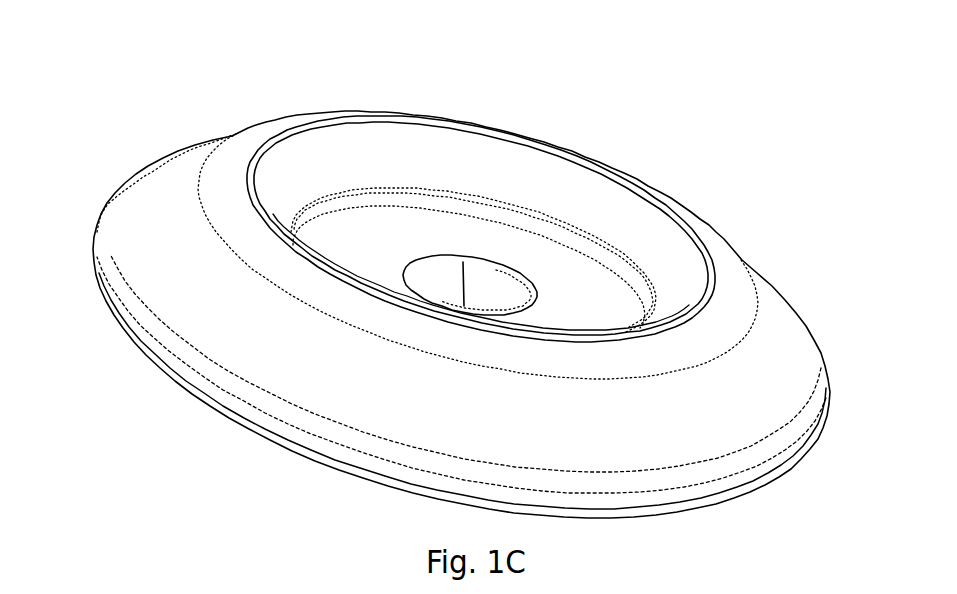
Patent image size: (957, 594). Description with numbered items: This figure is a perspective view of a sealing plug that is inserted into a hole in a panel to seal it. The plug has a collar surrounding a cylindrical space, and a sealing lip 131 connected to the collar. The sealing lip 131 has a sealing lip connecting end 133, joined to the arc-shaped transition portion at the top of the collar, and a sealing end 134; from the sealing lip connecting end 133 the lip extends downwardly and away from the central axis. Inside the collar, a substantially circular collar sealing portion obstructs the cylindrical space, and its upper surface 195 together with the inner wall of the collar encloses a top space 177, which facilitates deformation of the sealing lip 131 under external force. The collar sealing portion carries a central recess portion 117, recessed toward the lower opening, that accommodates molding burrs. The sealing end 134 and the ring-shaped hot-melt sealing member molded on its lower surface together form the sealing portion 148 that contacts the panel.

The recess portion 117 is at (482, 283).
The sealing lip 131 is at (187, 283).
The sealing lip connecting end 133 is at (225, 197).
The sealing end 134 is at (103, 222).
The sealing portion 148 is at (248, 412).
The top space 177 is at (402, 152).
The upper surface 195 is at (602, 257).